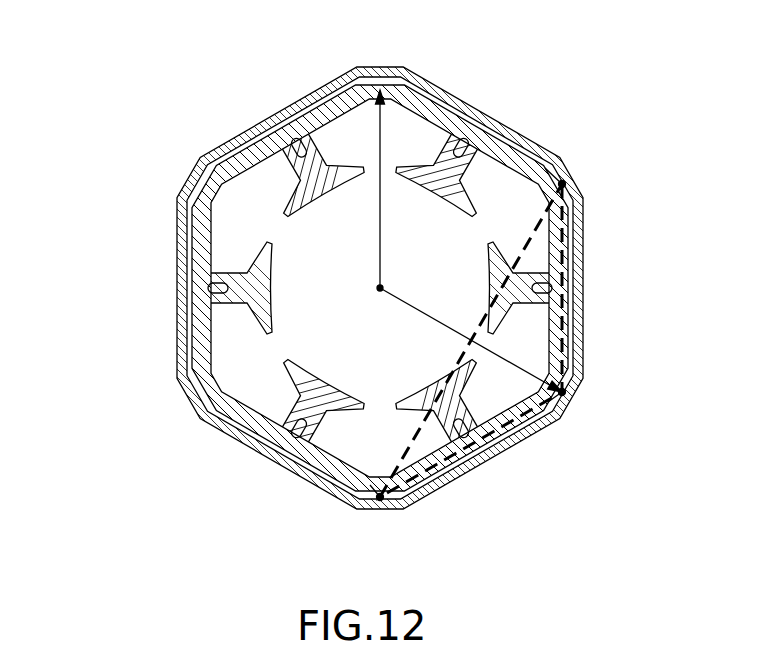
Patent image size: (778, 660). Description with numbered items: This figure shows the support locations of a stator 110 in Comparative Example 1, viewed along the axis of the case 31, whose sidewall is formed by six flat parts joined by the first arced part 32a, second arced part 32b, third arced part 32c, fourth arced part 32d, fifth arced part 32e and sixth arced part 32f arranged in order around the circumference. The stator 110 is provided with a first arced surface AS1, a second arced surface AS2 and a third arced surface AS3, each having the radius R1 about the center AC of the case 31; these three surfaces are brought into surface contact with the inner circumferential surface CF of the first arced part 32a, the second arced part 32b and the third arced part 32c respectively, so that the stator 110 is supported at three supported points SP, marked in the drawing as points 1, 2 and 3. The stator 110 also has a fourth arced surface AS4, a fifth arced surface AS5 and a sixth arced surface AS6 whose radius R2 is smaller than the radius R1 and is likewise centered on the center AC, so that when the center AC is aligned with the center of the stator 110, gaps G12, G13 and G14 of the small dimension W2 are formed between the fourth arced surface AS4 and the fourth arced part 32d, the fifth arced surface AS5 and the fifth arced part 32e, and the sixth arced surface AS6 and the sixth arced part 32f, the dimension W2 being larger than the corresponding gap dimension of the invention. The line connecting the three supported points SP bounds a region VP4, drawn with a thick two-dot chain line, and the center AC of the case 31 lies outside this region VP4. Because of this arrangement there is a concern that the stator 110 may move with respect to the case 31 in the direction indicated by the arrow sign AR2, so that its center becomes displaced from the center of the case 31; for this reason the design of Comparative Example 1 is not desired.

The case 31 is at (588, 283).
The stator 110 is at (190, 262).
The first arced part 32a is at (586, 200).
The second arced part 32b is at (582, 415).
The third arced part 32c is at (375, 513).
The fourth arced part 32d is at (192, 392).
The fifth arced part 32e is at (193, 172).
The sixth arced part 32f is at (400, 74).
The first arced surface AS1 is at (587, 193).
The second arced surface AS2 is at (583, 386).
The third arced surface AS3 is at (400, 500).
The fourth arced surface AS4 is at (222, 437).
The fifth arced surface AS5 is at (200, 188).
The sixth arced surface AS6 is at (368, 76).
The gap G12 is at (208, 420).
The gap G13 is at (200, 168).
The gap G14 is at (378, 70).
The dimension of gaps W2 is at (453, 150).
The radius R1 is at (471, 340).
The radius R2 is at (397, 189).
The center of the case AC is at (375, 303).
The inner circumferential surface CF is at (550, 166).
The supported point SP is at (566, 182).
The region VP4 is at (525, 432).
The arrow sign AR2 is at (160, 160).
The point 1 is at (584, 170).
The point 2 is at (584, 407).
The point 3 is at (377, 520).